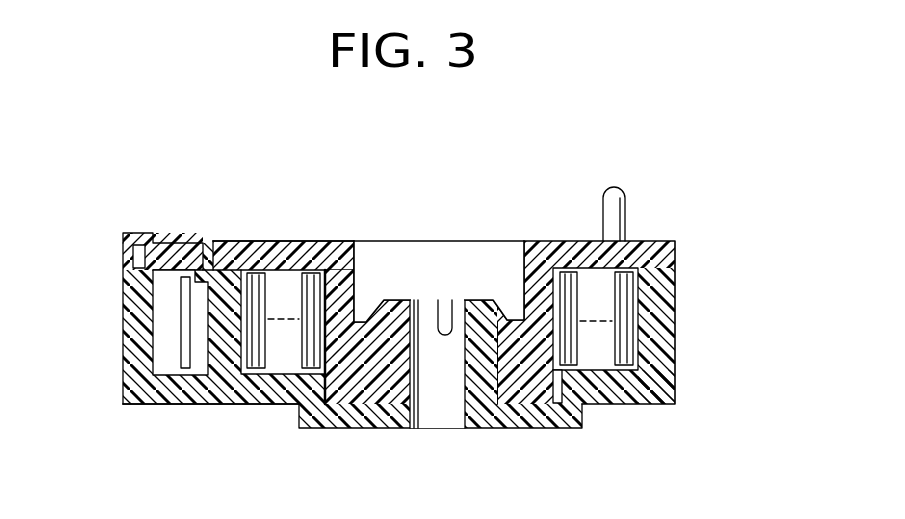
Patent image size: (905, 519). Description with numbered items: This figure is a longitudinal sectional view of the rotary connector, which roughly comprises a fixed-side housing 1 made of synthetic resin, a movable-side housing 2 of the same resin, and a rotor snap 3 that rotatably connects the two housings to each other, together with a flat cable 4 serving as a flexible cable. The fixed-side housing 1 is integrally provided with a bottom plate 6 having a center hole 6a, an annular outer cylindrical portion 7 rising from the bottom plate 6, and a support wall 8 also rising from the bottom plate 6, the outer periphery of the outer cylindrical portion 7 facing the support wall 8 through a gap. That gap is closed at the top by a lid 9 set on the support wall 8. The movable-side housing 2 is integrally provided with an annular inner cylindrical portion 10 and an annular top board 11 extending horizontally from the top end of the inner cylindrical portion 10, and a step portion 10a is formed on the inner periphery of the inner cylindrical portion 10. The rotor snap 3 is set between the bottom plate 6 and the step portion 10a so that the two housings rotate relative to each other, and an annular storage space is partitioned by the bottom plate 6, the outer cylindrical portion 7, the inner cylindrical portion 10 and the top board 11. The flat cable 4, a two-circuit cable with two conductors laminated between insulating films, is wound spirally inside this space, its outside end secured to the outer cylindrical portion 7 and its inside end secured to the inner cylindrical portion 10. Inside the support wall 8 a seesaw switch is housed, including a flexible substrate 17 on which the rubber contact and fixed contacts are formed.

The fixed-side housing 1 is at (675, 393).
The movable-side housing 2 is at (403, 186).
The rotor snap 3 is at (483, 430).
The flat cable 4 is at (647, 327).
The bottom plate 6 is at (217, 393).
The center hole 6a is at (342, 388).
The outer cylindrical portion 7 is at (228, 262).
The support wall 8 is at (133, 330).
The lid 9 is at (173, 258).
The inner cylindrical portion 10 is at (345, 275).
The step portion 10a is at (512, 325).
The top board 11 is at (303, 250).
The flexible substrate 17 is at (183, 355).